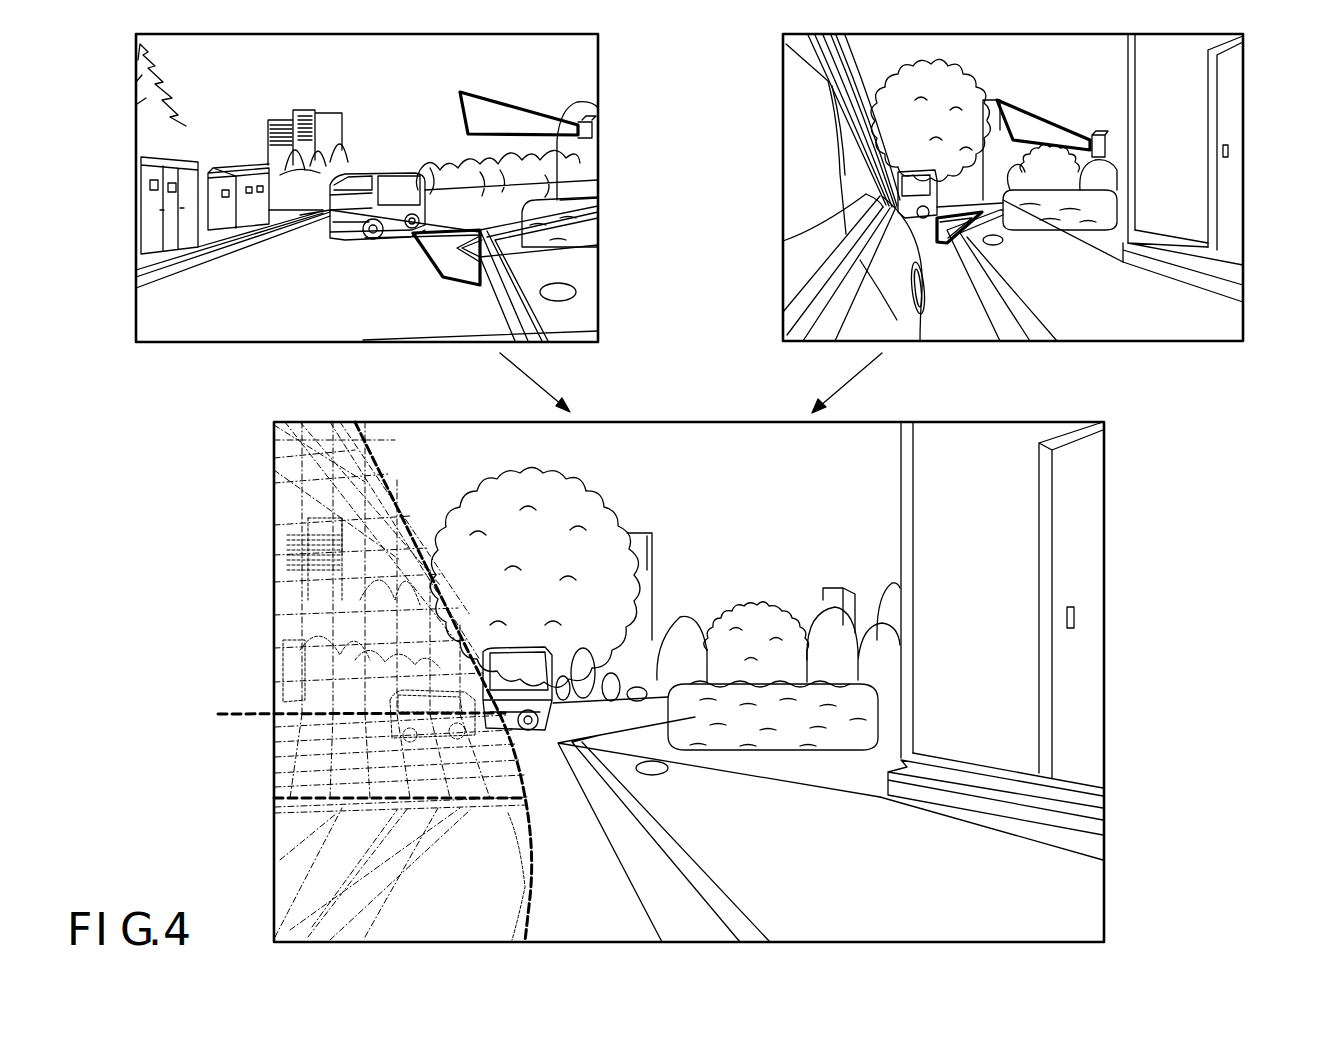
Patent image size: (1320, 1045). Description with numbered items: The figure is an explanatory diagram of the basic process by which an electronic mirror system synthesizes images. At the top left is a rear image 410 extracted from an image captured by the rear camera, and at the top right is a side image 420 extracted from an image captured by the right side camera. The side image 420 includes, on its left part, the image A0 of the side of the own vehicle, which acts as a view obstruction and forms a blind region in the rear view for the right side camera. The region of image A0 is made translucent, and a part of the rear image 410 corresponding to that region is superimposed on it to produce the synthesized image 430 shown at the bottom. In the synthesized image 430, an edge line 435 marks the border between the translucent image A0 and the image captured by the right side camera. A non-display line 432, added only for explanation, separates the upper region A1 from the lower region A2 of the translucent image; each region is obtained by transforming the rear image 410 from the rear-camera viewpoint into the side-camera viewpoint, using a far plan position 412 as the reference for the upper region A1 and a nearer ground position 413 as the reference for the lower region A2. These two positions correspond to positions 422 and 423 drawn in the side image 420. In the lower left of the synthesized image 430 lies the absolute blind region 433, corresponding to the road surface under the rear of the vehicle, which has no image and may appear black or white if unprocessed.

The rear image 410 is at (600, 60).
The far plan position 412 is at (566, 108).
The ground position 413 is at (485, 262).
The side image 420 is at (783, 151).
The position corresponding to far plan position 422 is at (1075, 110).
The position corresponding to ground position 423 is at (937, 222).
The image of the side of the vehicle A0 is at (896, 322).
The synthesized image 430 is at (1105, 484).
The non-display line 432 is at (252, 710).
The absolute blind region 433 is at (285, 840).
The edge line 435 is at (391, 468).
The upper region A1 is at (285, 600).
The lower region A2 is at (285, 765).